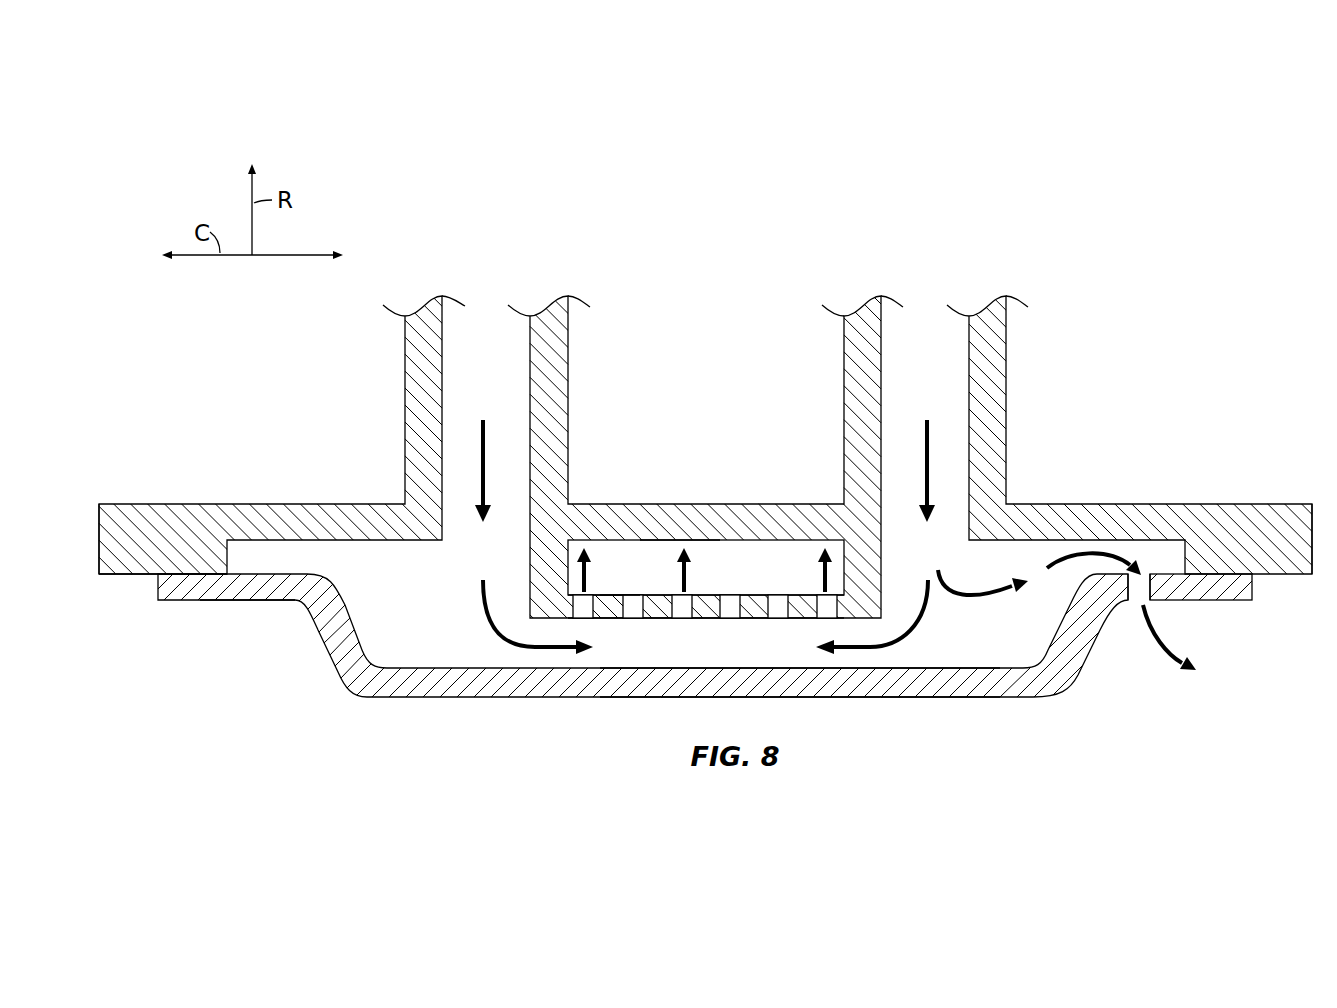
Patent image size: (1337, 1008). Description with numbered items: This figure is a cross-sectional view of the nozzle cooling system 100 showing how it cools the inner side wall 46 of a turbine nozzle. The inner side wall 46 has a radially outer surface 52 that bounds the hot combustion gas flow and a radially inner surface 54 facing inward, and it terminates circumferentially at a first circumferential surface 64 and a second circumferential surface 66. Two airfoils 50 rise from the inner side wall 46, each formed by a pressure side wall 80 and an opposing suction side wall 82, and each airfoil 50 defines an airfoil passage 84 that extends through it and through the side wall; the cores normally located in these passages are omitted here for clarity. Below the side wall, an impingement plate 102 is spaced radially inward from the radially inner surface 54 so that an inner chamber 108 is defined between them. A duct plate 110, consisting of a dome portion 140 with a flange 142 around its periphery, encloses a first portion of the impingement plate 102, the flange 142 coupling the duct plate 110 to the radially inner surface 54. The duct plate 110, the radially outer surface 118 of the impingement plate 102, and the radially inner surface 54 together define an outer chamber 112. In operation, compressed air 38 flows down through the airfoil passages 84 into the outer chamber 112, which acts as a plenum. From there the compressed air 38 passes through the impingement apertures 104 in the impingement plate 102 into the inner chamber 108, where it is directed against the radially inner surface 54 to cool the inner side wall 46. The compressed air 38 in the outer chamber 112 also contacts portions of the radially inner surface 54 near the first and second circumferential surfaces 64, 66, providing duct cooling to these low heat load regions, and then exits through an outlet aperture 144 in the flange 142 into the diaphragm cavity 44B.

The compressed air 38 is at (481, 455).
The diaphragm cavity 44B is at (1067, 735).
The inner side wall 46 is at (1112, 480).
The airfoil 50 is at (533, 275).
The radially outer surface 52 is at (287, 503).
The radially inner surface 54 is at (143, 578).
The first circumferential surface 64 is at (99, 512).
The second circumferential surface 66 is at (1312, 545).
The pressure side wall 80 is at (405, 398).
The suction side wall 82 is at (568, 372).
The airfoil passage 84 is at (490, 322).
The nozzle cooling system 100 is at (1104, 297).
The impingement plate 102 is at (660, 617).
The impingement aperture 104 is at (700, 628).
The inner chamber 108 is at (724, 556).
The duct plate 110 is at (426, 716).
The outer chamber 112 is at (967, 652).
The radially outer surface 118 is at (616, 594).
The dome portion 140 is at (888, 697).
The flange 142 is at (205, 602).
The outlet aperture 144 is at (1134, 606).